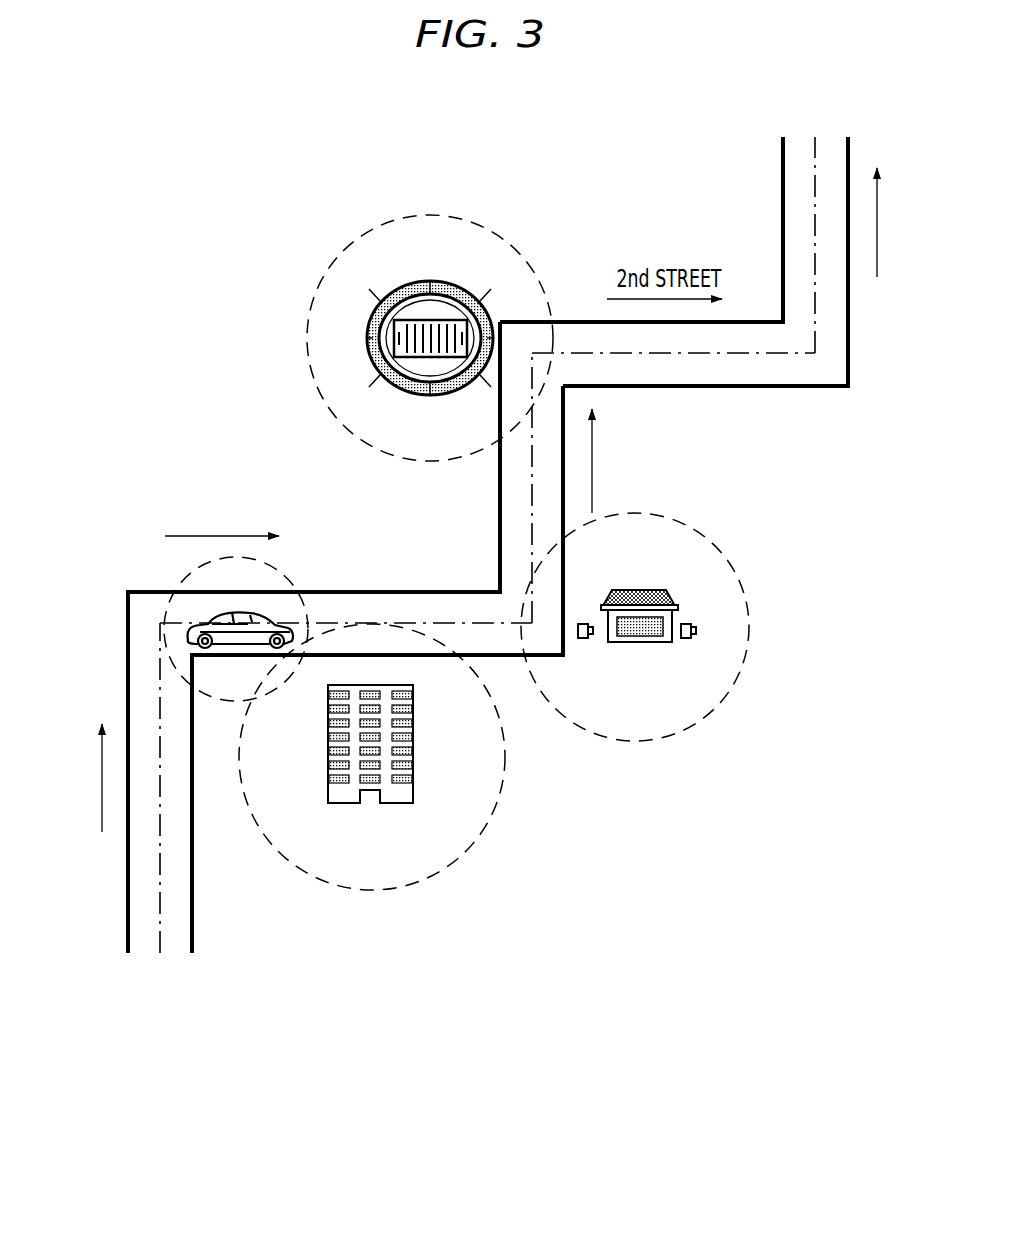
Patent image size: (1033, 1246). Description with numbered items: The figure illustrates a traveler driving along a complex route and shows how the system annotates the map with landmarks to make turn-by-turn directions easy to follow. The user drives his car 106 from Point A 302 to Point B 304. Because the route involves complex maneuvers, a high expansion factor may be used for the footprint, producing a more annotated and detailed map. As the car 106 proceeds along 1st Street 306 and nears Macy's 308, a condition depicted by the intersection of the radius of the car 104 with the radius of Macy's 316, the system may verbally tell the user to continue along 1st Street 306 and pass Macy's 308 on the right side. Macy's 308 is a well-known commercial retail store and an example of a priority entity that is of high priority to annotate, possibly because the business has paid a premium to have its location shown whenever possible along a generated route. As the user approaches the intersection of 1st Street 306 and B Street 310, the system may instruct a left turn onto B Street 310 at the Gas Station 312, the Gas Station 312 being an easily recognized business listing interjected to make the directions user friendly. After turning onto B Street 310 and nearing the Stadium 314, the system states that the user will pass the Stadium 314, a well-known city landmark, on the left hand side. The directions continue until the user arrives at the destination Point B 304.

The radius of the car 104 is at (188, 580).
The car 106 is at (248, 622).
The Point A 302 is at (158, 1010).
The Point B 304 is at (817, 82).
The 1st Street 306 is at (226, 498).
The Macy's 308 is at (415, 777).
The B Street 310 is at (628, 463).
The Gas Station 312 is at (637, 588).
The Stadium 314 is at (432, 282).
The radius of Macy's 316 is at (480, 832).